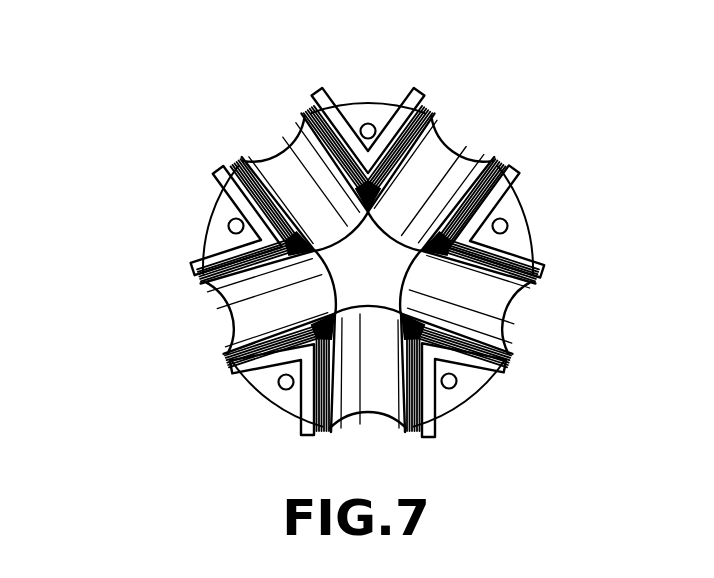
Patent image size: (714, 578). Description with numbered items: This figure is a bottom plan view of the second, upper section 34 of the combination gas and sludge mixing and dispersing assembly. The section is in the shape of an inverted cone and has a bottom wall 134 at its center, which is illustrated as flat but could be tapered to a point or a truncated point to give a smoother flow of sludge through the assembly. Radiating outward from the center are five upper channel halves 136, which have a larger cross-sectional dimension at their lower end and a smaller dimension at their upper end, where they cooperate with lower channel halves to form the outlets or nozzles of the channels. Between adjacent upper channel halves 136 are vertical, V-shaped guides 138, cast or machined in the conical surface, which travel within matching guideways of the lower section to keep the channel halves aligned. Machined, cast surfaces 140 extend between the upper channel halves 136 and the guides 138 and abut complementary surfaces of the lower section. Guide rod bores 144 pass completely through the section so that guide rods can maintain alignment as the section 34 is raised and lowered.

The second, upper section 34 is at (129, 226).
The bottom wall 134 is at (331, 284).
The upper channel halves 136 is at (290, 168).
The V-shaped guides 138 is at (414, 95).
The machined, cast surfaces 140 is at (305, 127).
The guide rod bores 144 is at (366, 123).